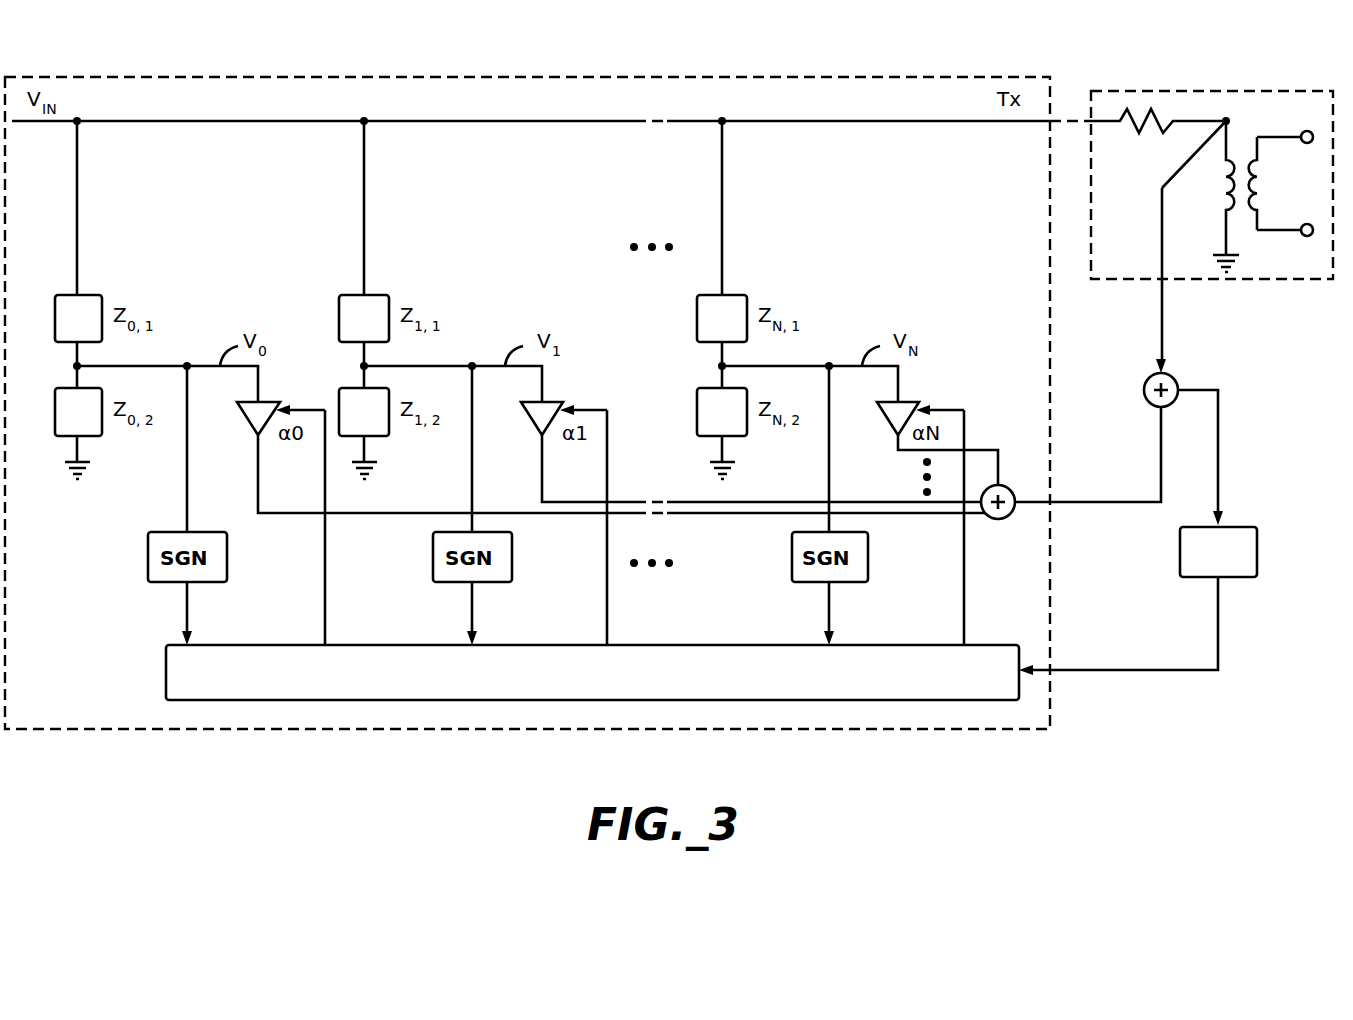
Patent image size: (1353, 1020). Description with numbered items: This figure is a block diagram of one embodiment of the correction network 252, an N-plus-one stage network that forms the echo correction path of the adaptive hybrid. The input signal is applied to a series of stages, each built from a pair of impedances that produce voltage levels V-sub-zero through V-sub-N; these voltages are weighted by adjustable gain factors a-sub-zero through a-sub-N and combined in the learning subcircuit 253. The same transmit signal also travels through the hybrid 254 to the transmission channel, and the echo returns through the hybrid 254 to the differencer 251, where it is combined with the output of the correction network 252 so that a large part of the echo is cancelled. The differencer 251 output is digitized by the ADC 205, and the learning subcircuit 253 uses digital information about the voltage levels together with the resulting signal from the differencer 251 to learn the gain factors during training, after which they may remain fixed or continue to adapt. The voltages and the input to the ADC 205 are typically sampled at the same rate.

The differencer 251 is at (1150, 378).
The correction network 252 is at (256, 740).
The learning subcircuit 253 is at (862, 645).
The hybrid 254 is at (1208, 91).
The ADC 205 is at (1240, 577).